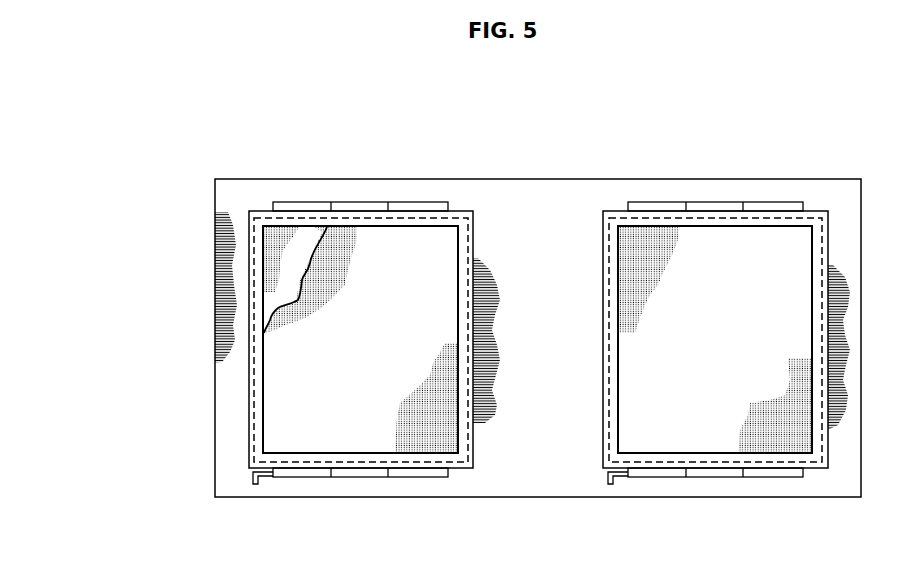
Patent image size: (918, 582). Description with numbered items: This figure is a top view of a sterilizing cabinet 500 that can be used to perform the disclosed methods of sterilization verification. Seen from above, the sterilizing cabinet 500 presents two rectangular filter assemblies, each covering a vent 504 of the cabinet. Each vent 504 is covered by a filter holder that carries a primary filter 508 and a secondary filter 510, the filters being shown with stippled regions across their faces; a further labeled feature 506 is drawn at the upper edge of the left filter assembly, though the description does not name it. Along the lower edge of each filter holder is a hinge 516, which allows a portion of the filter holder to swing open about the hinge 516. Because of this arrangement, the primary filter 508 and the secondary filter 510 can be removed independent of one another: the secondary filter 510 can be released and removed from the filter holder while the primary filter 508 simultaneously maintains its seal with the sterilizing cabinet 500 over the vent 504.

The sterilizing cabinet 500 is at (186, 413).
The vent 504 is at (250, 255).
The edge seal 506 is at (292, 220).
The primary filter 508 is at (310, 235).
The secondary filter 510 is at (430, 233).
The hinge 516 is at (318, 475).